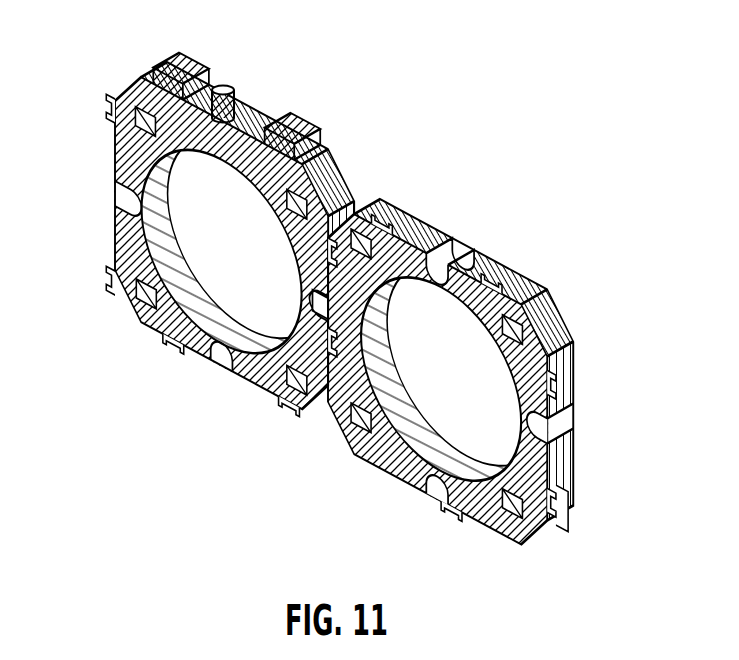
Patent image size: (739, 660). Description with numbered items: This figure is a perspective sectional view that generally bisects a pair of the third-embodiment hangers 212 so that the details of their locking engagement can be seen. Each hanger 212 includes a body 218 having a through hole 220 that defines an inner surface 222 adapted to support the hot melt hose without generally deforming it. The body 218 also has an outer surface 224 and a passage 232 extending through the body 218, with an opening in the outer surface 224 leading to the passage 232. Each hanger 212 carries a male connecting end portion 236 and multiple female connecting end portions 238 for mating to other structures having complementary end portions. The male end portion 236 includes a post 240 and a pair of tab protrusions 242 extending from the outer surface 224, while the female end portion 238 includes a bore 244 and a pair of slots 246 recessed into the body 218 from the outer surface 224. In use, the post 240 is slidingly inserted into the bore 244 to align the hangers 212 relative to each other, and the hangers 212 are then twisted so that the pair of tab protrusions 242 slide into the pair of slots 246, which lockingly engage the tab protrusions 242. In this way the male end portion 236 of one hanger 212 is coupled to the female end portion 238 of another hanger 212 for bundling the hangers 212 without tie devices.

The hanger 212 is at (317, 72).
The body 218 is at (132, 82).
The through hole 220 is at (178, 345).
The inner surface 222 is at (170, 222).
The outer surface 224 is at (308, 152).
The passage 232 is at (138, 112).
The connecting end portion 236 is at (255, 87).
The connecting end portion 238 is at (86, 211).
The post 240 is at (222, 86).
The tab protrusion 242 is at (166, 62).
The bore 244 is at (122, 196).
The slot 246 is at (118, 108).